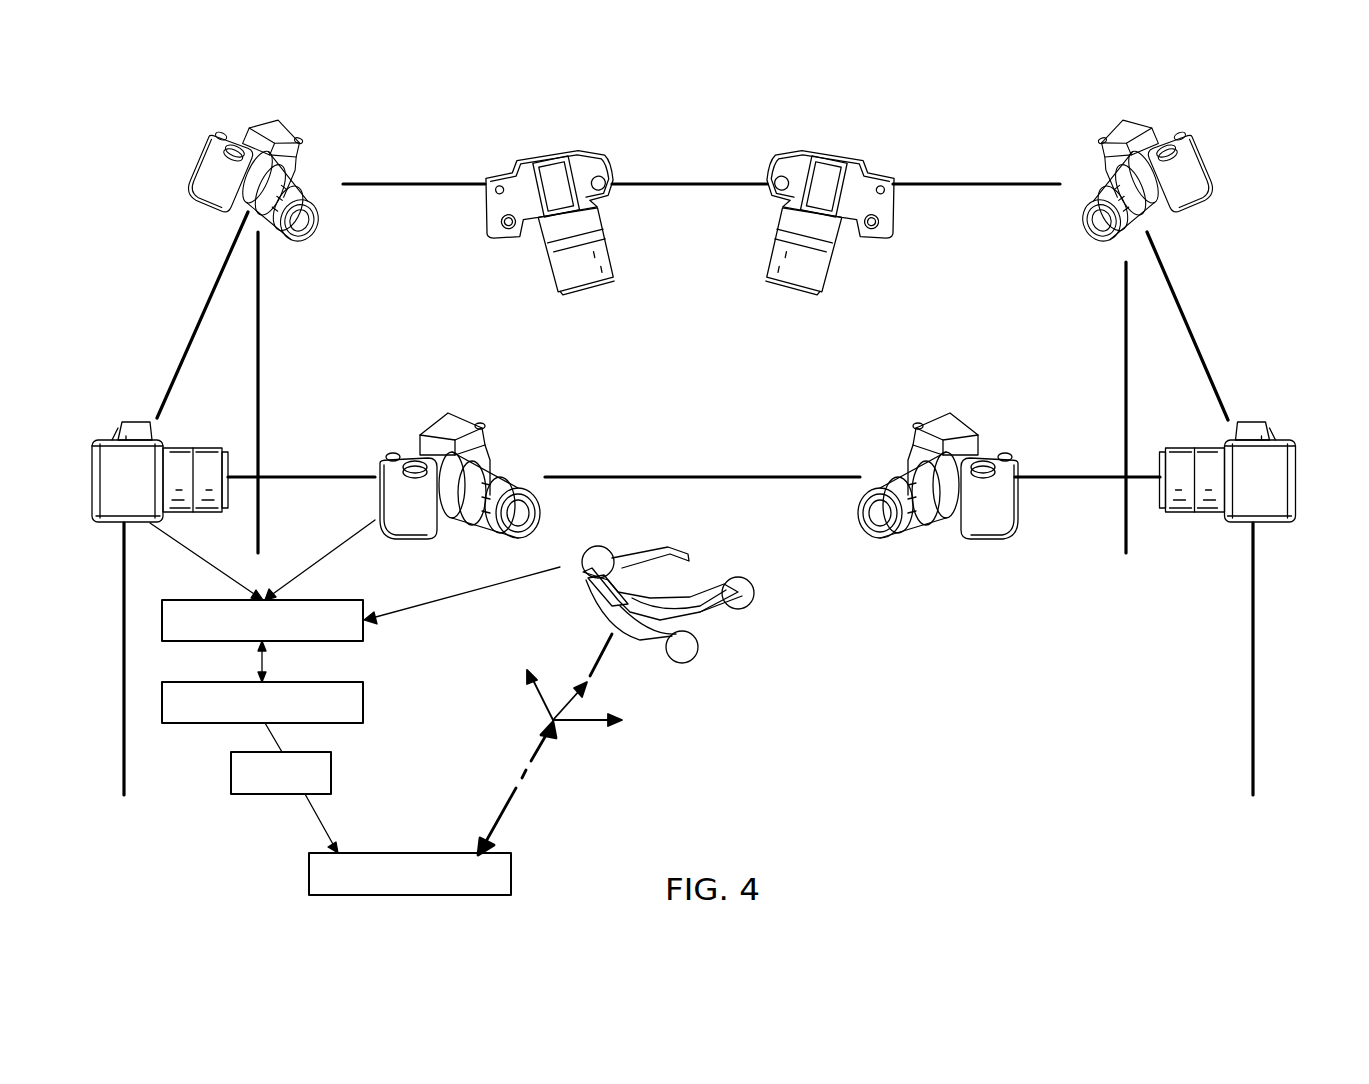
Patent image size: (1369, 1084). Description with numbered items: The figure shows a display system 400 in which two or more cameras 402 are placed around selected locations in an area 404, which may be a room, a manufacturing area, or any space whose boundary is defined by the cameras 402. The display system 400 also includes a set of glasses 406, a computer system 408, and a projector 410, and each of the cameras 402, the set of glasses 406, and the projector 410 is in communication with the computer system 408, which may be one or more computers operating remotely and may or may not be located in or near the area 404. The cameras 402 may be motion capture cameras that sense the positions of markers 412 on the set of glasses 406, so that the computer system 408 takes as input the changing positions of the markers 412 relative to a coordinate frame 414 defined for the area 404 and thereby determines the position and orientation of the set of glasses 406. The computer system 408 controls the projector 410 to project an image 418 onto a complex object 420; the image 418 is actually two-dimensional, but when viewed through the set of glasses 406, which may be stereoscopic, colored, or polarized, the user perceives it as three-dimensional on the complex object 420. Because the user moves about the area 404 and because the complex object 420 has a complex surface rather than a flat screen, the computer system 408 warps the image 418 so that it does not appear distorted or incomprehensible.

The display system 400 is at (412, 120).
The cameras 402 is at (852, 152).
The area 404 is at (718, 347).
The set of glasses 406 is at (686, 549).
The computer system 408 is at (353, 598).
The projector 410 is at (365, 707).
The markers 412 is at (757, 613).
The coordinate frame 414 is at (591, 743).
The image 418 is at (231, 773).
The complex object 420 is at (309, 874).